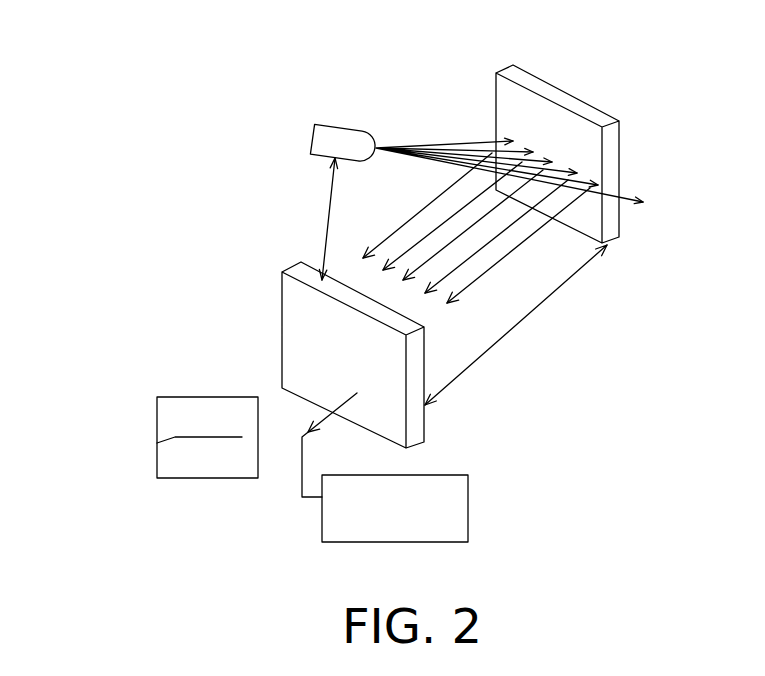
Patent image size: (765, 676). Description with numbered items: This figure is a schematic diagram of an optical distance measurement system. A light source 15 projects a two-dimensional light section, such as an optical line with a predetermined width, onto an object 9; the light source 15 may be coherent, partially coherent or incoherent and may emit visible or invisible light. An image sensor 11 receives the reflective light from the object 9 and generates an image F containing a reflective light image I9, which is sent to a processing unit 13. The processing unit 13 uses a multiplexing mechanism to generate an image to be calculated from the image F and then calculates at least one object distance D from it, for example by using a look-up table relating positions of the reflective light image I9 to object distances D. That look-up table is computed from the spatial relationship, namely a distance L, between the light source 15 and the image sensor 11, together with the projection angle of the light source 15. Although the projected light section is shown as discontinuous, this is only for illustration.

The object 9 is at (595, 118).
The image sensor 11 is at (300, 262).
The processing unit 13 is at (468, 505).
The light source 15 is at (342, 125).
The distance L is at (320, 219).
The object distance D is at (516, 325).
The image F is at (312, 420).
The reflective light image I9 is at (157, 443).